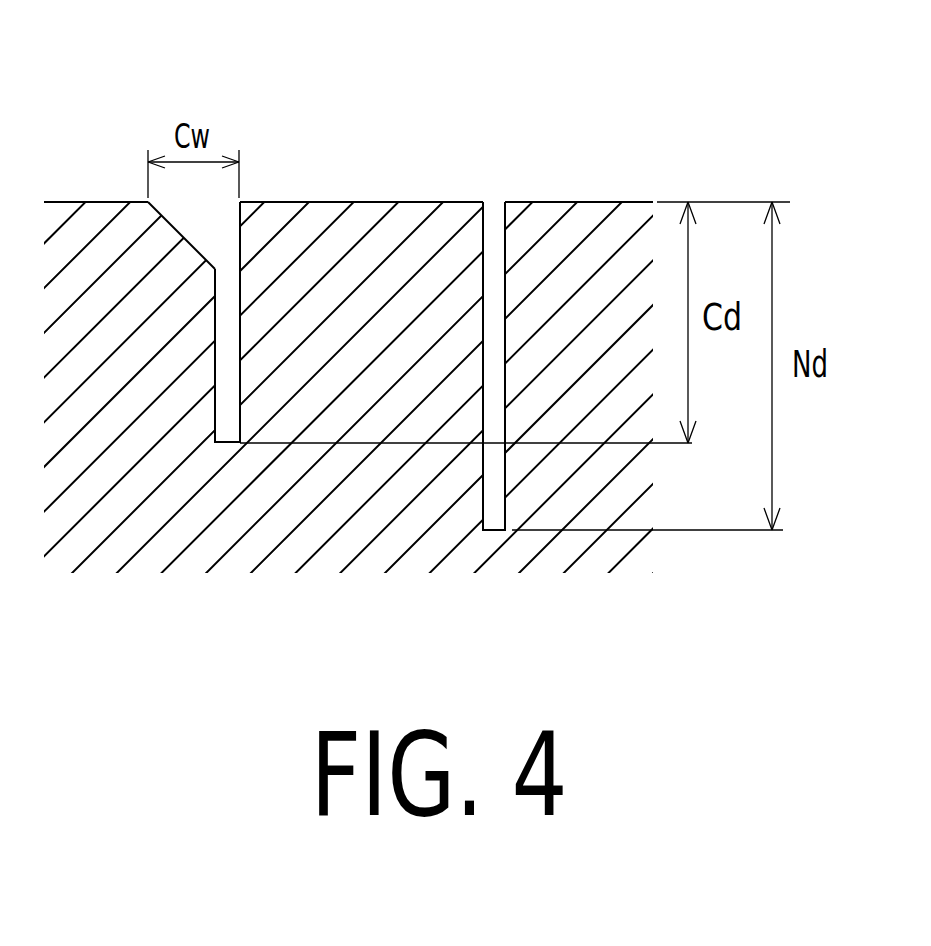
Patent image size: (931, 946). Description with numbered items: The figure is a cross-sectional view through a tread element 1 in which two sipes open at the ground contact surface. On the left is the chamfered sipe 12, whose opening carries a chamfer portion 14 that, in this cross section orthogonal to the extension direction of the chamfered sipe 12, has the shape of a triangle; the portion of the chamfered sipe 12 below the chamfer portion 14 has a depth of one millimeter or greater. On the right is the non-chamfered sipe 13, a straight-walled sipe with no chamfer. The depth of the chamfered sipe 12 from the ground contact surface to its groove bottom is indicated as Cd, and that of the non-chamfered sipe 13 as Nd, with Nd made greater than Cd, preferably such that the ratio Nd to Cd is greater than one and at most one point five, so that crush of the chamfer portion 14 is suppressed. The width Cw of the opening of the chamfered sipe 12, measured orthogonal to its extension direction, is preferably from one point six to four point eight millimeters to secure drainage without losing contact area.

The workpiece 1 is at (368, 137).
The chamfered sipe 12 is at (248, 187).
The non-chamfered sipe 13 is at (493, 190).
The chamfer portion 14 is at (183, 233).